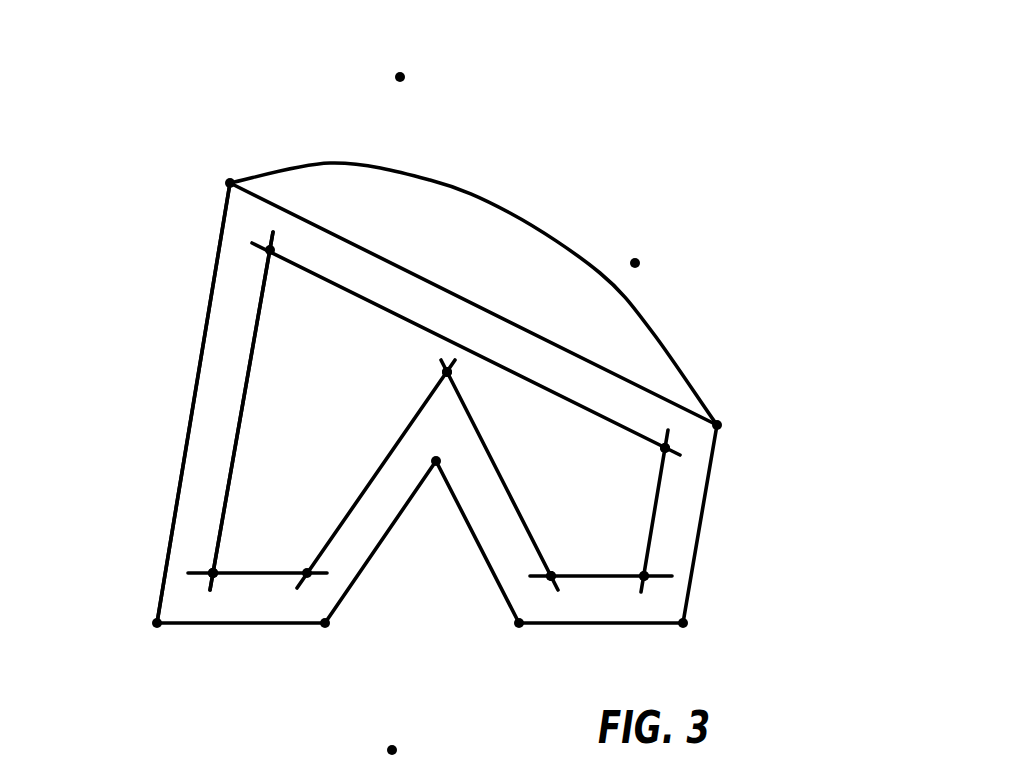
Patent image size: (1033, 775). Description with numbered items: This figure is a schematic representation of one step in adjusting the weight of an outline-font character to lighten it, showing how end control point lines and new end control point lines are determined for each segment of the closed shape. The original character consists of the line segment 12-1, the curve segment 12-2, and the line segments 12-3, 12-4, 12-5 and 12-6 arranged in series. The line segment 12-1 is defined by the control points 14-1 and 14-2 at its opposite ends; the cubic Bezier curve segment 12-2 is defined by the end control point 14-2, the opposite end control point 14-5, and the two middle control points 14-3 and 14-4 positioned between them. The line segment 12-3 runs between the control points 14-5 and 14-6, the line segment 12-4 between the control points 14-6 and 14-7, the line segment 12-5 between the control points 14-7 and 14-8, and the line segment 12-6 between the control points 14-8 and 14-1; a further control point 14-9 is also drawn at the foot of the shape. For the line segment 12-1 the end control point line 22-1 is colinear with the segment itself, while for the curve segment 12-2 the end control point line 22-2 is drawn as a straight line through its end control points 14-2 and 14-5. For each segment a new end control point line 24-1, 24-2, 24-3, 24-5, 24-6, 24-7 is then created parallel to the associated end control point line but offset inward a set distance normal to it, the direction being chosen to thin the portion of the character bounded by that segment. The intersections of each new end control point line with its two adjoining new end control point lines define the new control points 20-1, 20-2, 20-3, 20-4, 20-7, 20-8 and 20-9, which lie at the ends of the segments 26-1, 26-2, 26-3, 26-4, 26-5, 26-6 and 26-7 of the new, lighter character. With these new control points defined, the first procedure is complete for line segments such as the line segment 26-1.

The line segment 12-1 is at (200, 405).
The curve segment 12-2 is at (510, 213).
The line segment 12-3 is at (700, 530).
The line segment 12-4 is at (610, 628).
The line segment 12-5 is at (500, 598).
The line segment 12-6 is at (380, 545).
The control point 14-1 is at (157, 623).
The control point 14-2 is at (230, 183).
The middle control point 14-3 is at (400, 77).
The middle control point 14-4 is at (635, 263).
The control point 14-5 is at (717, 425).
The control point 14-6 is at (683, 623).
The control point 14-7 is at (519, 623).
The control point 14-8 is at (436, 461).
The vertex 14-9 is at (325, 623).
The new control point 20-1 is at (213, 573).
The new control point 20-2 is at (270, 250).
The new control point 20-3 is at (665, 448).
The new control point 20-4 is at (644, 576).
The new control point 20-7 is at (551, 576).
The new control point 20-8 is at (447, 372).
The new control point 20-9 is at (307, 573).
The end control point line 22-1 is at (190, 455).
The end control point line 22-2 is at (430, 282).
The new end control point line 24-1 is at (213, 578).
The new end control point line 24-2 is at (665, 448).
The new end control point line 24-3 is at (644, 576).
The new end control point line 24-5 is at (551, 576).
The new end control point line 24-6 is at (447, 372).
The new end control point line 24-7 is at (213, 573).
The line segment 26-1 is at (245, 437).
The segment 26-2 is at (372, 305).
The segment 26-3 is at (655, 505).
The segment 26-4 is at (600, 570).
The segment 26-5 is at (500, 477).
The segment 26-6 is at (375, 475).
The segment 26-7 is at (258, 573).